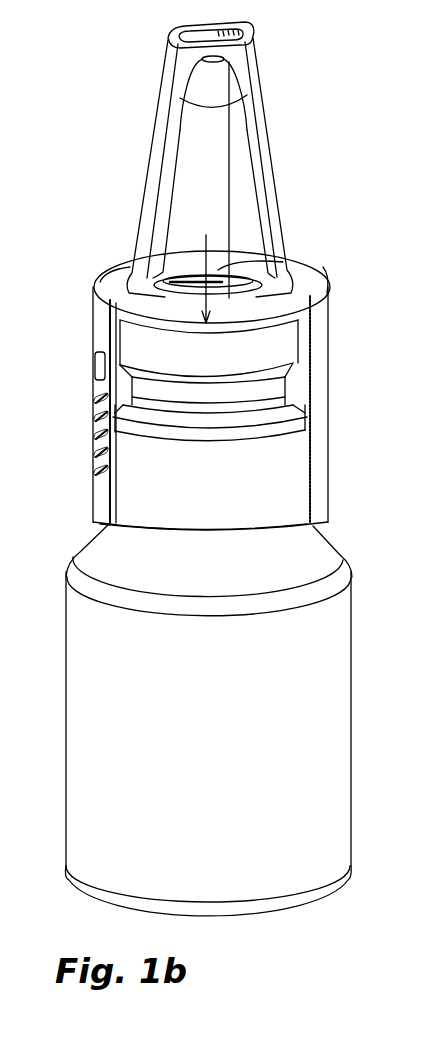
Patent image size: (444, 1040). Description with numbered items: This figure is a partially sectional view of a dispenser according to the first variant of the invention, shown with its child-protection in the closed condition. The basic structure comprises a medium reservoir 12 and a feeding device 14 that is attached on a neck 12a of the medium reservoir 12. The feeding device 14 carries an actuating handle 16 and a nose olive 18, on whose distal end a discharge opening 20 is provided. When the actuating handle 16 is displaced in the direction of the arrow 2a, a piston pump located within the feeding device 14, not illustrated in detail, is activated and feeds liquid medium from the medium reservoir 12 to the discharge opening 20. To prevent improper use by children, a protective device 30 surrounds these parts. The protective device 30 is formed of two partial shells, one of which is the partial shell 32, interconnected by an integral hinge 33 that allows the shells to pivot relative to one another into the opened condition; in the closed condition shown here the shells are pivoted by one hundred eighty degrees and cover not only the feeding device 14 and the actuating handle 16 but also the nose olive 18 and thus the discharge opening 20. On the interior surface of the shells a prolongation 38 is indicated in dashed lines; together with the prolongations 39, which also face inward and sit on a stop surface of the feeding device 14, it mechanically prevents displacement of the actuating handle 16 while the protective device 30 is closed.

The medium reservoir 12 is at (220, 683).
The neck 12a is at (280, 555).
The feeding device 14 is at (177, 500).
The actuating handle 16 is at (187, 330).
The nose olive 18 is at (243, 203).
The discharge opening 20 is at (218, 60).
The arrow 2a is at (276, 262).
The protective device 30 is at (154, 111).
The partial shell 32 is at (0, 188).
The integral hinge 33 is at (6, 249).
The prolongation 38 is at (313, 303).
The prolongations 39 is at (313, 392).